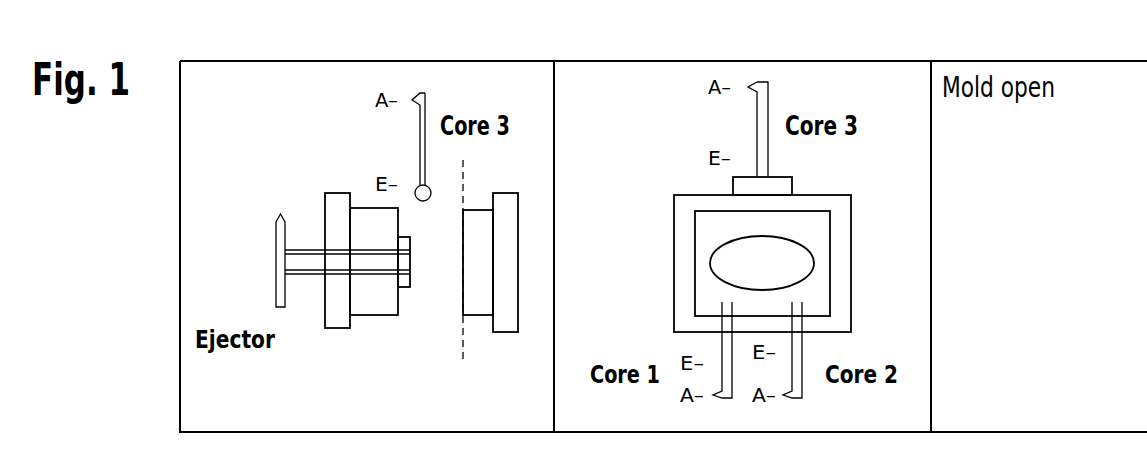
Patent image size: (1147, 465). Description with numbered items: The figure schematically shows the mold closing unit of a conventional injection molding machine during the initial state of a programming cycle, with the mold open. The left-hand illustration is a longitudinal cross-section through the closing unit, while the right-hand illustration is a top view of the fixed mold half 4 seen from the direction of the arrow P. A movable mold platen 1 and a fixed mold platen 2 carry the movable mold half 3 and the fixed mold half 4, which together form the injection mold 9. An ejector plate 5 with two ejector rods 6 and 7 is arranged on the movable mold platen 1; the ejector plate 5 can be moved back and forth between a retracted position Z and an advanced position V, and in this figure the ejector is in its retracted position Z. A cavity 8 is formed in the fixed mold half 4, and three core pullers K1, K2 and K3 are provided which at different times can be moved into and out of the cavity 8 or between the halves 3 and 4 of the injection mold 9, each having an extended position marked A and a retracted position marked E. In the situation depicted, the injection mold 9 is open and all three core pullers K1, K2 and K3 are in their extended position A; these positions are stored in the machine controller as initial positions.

The movable mold platen 1 is at (334, 193).
The fixed mold platen 2 is at (502, 193).
The movable mold half 3 is at (375, 314).
The fixed mold half 4 is at (475, 314).
The ejector plate 5 is at (276, 290).
The ejector rod 6 is at (302, 250).
The ejector rod 7 is at (304, 276).
The cavity 8 is at (800, 264).
The injection mold 9 is at (505, 357).
The core puller K1 is at (722, 340).
The core puller K2 is at (802, 346).
The core puller K3 is at (425, 100).
The arrow P is at (448, 260).
The retracted position Z is at (279, 212).
The advanced position V is at (297, 212).